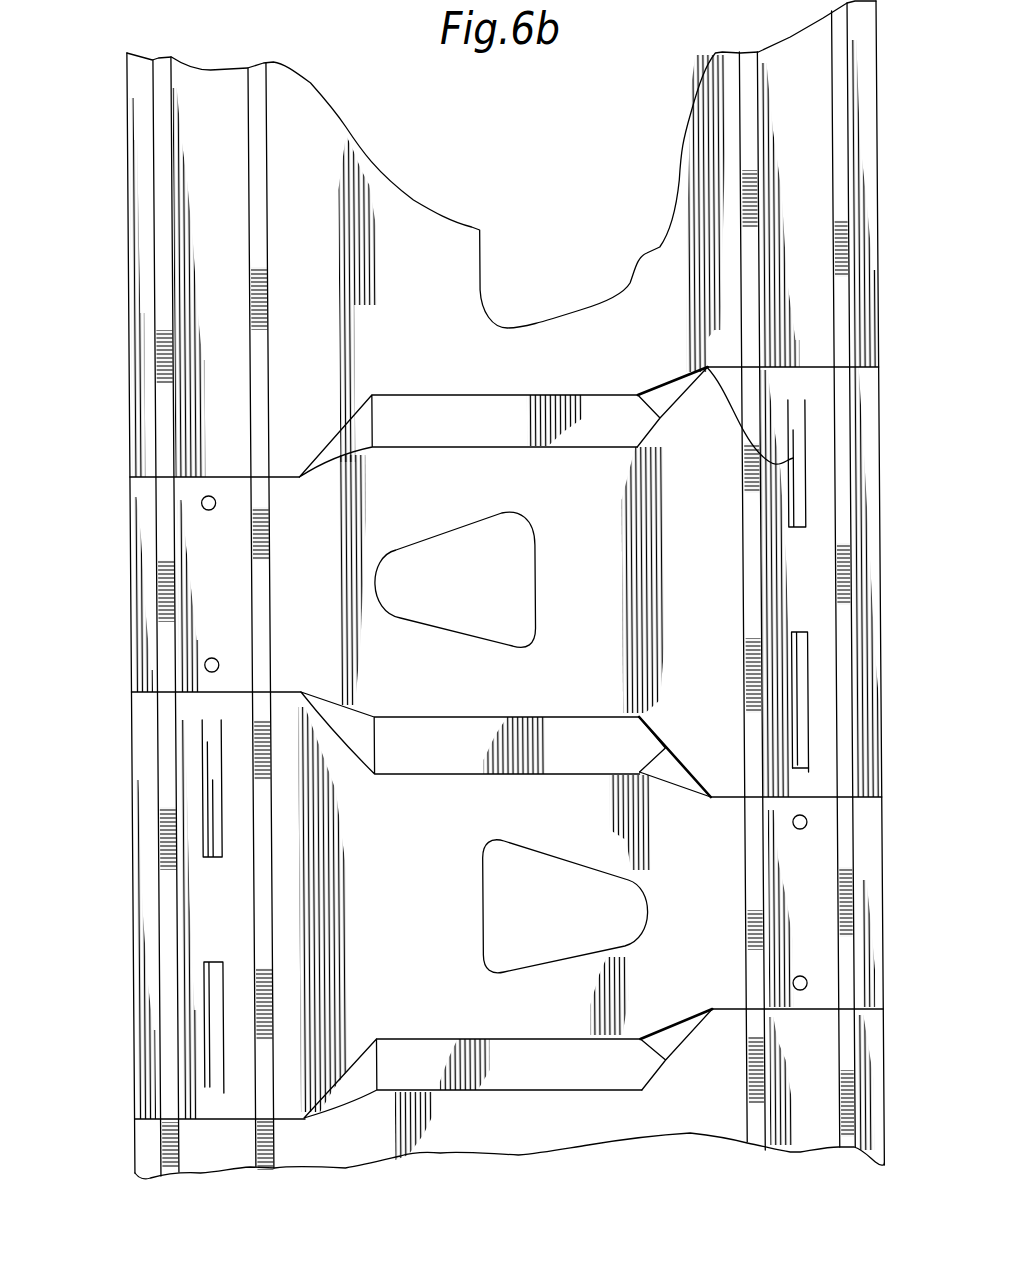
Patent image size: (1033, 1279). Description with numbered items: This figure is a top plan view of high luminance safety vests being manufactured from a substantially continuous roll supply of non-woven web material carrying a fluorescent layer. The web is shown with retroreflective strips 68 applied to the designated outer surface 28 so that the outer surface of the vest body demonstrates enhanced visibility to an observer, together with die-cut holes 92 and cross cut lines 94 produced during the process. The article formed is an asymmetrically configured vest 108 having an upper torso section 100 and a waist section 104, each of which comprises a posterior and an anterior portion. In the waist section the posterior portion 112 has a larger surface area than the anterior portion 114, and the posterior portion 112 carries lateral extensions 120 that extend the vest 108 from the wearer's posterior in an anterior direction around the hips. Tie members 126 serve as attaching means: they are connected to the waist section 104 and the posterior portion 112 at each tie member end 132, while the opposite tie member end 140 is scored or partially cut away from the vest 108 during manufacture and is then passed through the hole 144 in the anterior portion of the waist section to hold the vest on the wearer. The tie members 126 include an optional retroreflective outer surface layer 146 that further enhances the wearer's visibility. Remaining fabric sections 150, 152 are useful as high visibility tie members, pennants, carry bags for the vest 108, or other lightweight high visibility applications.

The outer surface 28 is at (136, 157).
The retroreflective strips 68 is at (254, 768).
The die-cut holes 92 is at (468, 513).
The cross cut lines 94 is at (197, 468).
The upper torso section 100 is at (430, 685).
The waist section 104 is at (237, 591).
The vest 108 is at (128, 602).
The posterior portion 112 is at (716, 592).
The anterior portion 114 is at (177, 485).
The lateral extensions 120 is at (703, 368).
The tie members 126 is at (720, 377).
The tie member end 132 is at (797, 530).
The tie member end 140 is at (793, 765).
The hole 144 is at (200, 506).
The retroreflective outer surface layer 146 is at (700, 375).
The fabric section 150 is at (463, 736).
The fabric section 152 is at (665, 765).